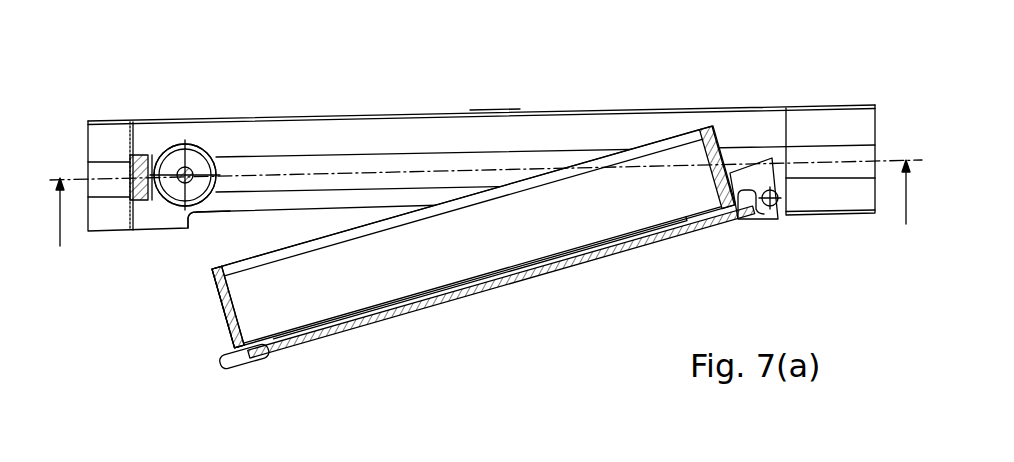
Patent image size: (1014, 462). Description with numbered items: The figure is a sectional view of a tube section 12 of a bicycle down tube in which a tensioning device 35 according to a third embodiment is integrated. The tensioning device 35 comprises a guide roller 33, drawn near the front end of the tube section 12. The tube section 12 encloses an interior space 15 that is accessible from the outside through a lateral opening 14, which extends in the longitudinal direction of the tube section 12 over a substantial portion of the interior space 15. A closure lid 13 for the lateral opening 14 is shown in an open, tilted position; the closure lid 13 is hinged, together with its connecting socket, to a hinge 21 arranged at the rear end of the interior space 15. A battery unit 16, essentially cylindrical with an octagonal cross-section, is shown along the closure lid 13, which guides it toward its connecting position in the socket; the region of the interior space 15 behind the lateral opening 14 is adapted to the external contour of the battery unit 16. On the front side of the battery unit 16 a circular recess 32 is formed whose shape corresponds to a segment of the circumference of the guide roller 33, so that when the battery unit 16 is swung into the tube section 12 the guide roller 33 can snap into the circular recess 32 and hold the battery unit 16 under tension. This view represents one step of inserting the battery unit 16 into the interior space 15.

The tube section 12 is at (404, 90).
The closure lid 13 is at (468, 300).
The lateral opening 14 is at (238, 222).
The interior space 15 is at (476, 151).
The battery unit 16 is at (216, 267).
The hinge 21 is at (771, 206).
The circular recess 32 is at (226, 305).
The guide roller 33 is at (173, 143).
The tensioning device 35 is at (217, 152).